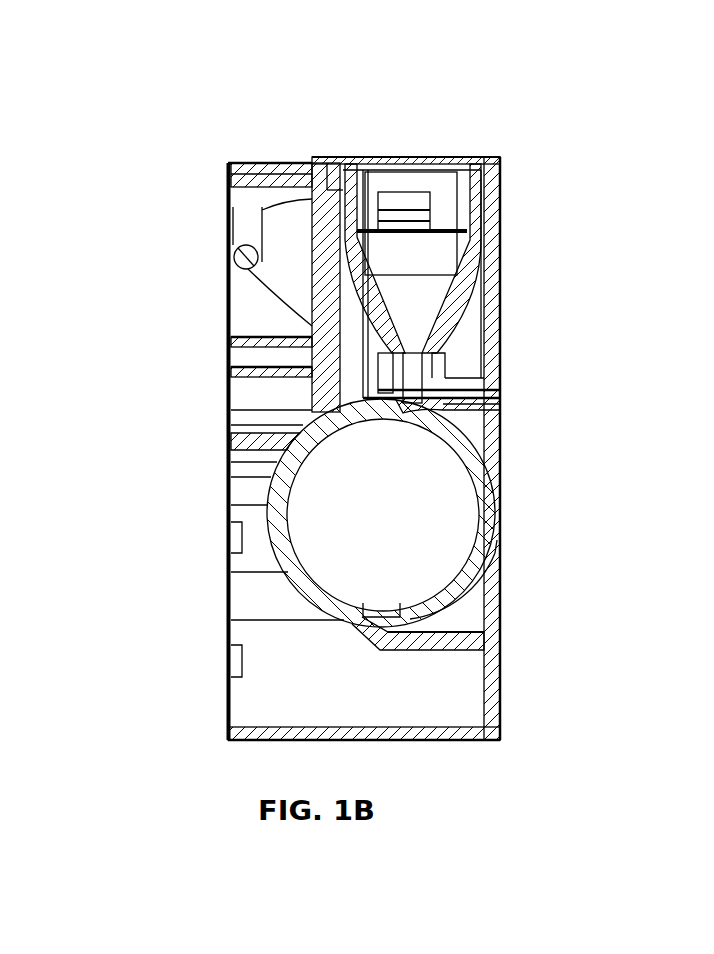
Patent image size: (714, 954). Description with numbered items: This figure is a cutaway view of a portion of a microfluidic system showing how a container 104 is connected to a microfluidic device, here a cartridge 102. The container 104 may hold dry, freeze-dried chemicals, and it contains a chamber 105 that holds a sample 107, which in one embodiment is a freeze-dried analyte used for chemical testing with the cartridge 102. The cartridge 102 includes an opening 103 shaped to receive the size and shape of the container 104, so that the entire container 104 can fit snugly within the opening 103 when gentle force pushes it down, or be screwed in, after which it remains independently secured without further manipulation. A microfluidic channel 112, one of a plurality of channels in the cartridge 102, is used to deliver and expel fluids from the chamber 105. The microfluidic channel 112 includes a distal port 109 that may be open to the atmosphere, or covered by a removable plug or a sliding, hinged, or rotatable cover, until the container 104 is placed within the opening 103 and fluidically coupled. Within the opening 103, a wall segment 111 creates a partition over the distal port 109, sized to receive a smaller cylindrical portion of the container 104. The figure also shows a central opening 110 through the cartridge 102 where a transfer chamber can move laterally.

The cartridge 102 is at (181, 165).
The opening 103 is at (365, 333).
The container 104 is at (412, 145).
The chamber 105 is at (427, 255).
The sample 107 is at (412, 307).
The distal port 109 is at (412, 397).
The central opening 110 is at (323, 522).
The wall segment 111 is at (355, 398).
The microfluidic channel 112 is at (440, 393).